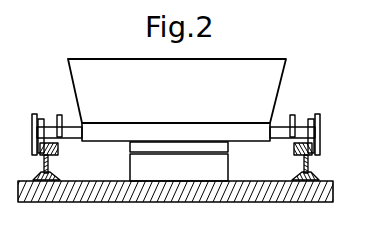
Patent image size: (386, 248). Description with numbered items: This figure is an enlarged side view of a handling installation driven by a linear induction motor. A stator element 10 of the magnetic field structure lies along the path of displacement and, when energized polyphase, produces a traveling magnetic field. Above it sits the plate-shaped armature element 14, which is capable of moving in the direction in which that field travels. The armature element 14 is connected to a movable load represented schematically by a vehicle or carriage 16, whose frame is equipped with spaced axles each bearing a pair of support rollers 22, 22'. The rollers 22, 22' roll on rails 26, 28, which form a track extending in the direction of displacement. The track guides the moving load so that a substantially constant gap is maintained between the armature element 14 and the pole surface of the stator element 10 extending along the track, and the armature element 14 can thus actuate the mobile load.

The stator element 10 is at (177, 167).
The armature element 14 is at (158, 143).
The vehicle or carriage 16 is at (92, 72).
The support roller 22 is at (41, 111).
The support roller 22' is at (316, 111).
The rail 26 is at (53, 165).
The rail 28 is at (313, 169).